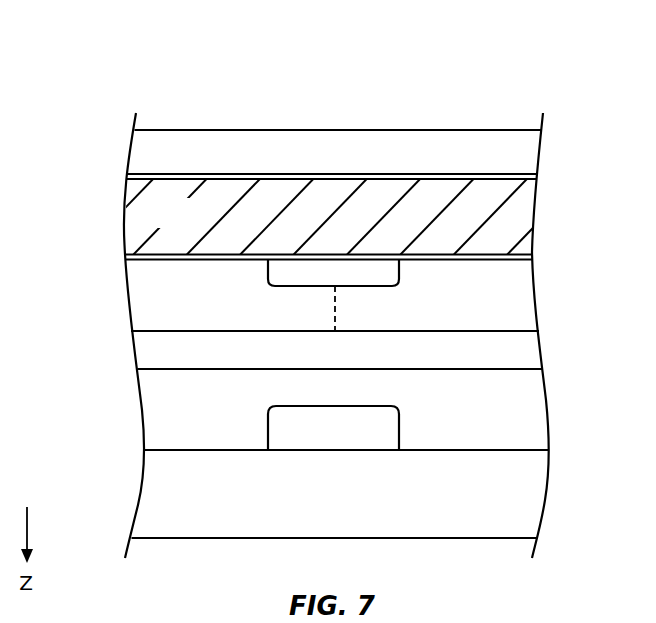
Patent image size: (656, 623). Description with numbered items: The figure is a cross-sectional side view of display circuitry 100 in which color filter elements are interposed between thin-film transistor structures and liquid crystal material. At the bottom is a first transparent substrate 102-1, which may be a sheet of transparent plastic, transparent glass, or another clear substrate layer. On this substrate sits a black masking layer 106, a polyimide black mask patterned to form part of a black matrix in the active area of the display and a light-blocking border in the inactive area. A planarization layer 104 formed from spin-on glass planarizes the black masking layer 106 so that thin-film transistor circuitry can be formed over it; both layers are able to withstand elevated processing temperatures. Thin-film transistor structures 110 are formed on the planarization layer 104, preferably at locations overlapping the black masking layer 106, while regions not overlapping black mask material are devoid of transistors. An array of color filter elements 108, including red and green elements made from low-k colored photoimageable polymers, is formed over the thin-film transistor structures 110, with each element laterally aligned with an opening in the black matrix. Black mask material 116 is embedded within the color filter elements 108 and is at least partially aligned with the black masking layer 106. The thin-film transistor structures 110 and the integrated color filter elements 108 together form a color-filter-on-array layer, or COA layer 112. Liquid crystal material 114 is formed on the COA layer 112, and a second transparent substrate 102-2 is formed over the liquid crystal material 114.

The display circuitry 100 is at (526, 68).
The first transparent substrate 102-1 is at (535, 490).
The second transparent substrate 102-2 is at (530, 147).
The planarization layer 104 is at (559, 370).
The black masking layer 106 is at (383, 441).
The color filter elements 108 is at (113, 262).
The thin-film transistor structures 110 is at (148, 350).
The COA layer 112 is at (559, 260).
The liquid crystal material 114 is at (559, 178).
The black mask material 116 is at (285, 281).